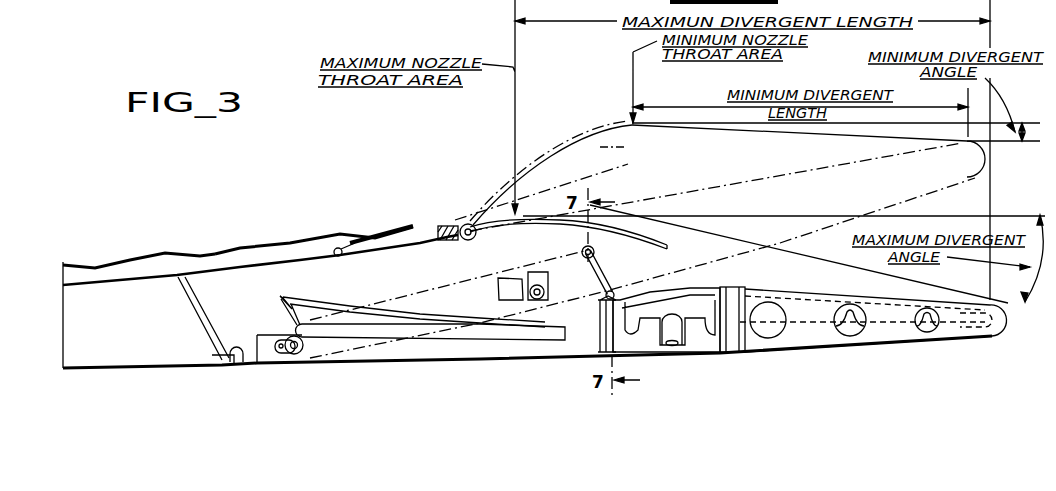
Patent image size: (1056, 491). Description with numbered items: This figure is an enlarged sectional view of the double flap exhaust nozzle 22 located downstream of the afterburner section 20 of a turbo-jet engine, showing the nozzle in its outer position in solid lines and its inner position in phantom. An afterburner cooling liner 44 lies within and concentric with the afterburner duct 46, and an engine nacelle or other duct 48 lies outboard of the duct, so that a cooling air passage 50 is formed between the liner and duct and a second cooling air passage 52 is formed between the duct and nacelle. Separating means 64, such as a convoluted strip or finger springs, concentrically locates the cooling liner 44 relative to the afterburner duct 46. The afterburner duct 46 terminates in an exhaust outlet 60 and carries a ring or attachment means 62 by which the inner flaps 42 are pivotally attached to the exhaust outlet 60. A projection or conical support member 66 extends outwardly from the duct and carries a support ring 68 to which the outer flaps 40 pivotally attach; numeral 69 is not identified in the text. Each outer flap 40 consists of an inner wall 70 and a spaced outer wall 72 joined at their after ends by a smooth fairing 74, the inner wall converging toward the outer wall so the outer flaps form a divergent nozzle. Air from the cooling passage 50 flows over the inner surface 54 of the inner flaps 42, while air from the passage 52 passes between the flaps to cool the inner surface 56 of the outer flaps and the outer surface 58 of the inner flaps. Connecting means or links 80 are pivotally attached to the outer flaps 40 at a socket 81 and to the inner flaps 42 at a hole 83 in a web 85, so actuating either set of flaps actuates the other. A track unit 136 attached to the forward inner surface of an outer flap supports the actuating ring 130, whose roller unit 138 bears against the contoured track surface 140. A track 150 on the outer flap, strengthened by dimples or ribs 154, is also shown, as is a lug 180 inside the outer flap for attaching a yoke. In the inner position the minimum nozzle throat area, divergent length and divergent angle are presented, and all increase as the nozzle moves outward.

The afterburner section 20 is at (178, 219).
The exhaust nozzle 22 is at (814, 78).
The outer flaps 40 is at (733, 190).
The inner flaps 42 is at (621, 240).
The afterburner cooling liner 44 is at (266, 246).
The afterburner duct 46 is at (222, 268).
The engine nacelle or other duct 48 is at (110, 368).
The cooling air passage 50 is at (139, 264).
The cooling air passage 52 is at (98, 334).
The inner surface of inner flaps 54 is at (555, 158).
The inner surface of outer flaps 56 is at (760, 284).
The outer surface of inner flaps 58 is at (640, 248).
The exhaust outlet 60 is at (463, 225).
The ring or attachment means 62 is at (471, 241).
The separating means 64 is at (355, 240).
The projection or conical support member 66 is at (187, 298).
The support ring 68 is at (265, 360).
The lower pivot pin 69 is at (299, 355).
The inner wall 70 is at (779, 291).
The outer wall 72 is at (807, 350).
The smooth fairing 74 is at (1007, 320).
The connecting means or links 80 is at (603, 276).
The socket 81 is at (600, 310).
The hole 83 is at (583, 255).
The web 85 is at (532, 233).
The actuating ring 130 is at (512, 293).
The track unit 136 is at (286, 302).
The roller unit 138 is at (552, 283).
The contoured track surface 140 is at (412, 300).
The track 150 is at (896, 327).
The dimples or ribs 154 is at (940, 322).
The lug 180 is at (683, 330).